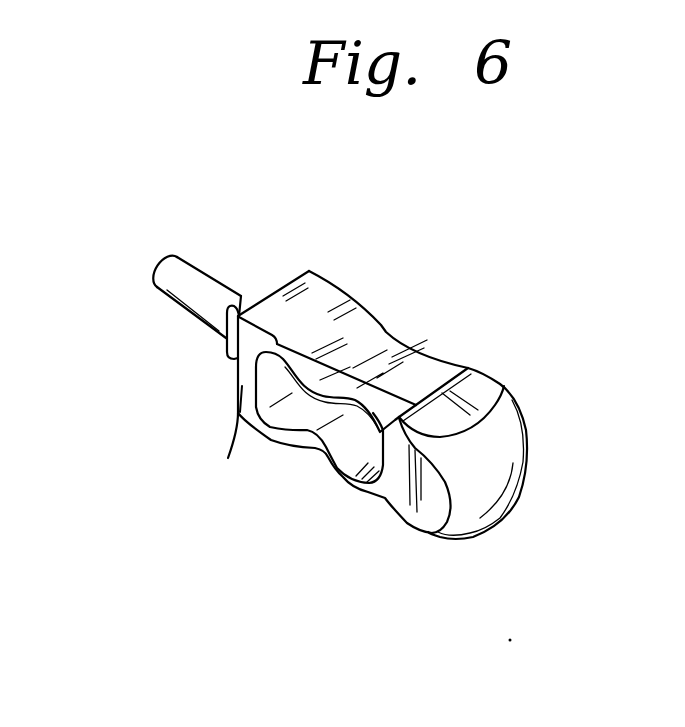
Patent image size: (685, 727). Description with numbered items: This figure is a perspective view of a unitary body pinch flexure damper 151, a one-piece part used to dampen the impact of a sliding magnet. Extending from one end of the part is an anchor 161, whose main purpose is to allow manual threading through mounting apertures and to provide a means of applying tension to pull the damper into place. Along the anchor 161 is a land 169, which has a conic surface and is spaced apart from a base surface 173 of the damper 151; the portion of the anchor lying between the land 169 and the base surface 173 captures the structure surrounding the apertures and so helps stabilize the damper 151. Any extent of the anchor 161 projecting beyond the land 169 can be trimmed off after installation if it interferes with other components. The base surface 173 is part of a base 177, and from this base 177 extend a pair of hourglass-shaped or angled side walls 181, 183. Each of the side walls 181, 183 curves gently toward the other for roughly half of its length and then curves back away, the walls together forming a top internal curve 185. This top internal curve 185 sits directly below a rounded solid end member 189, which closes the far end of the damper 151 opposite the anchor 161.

The unitary body pinch flexure damper 151 is at (528, 354).
The anchor 161 is at (194, 265).
The land 169 is at (265, 296).
The base surface 173 is at (291, 278).
The base 177 is at (233, 442).
The side wall 181 is at (372, 332).
The side wall 183 is at (318, 452).
The top internal curve 185 is at (342, 477).
The rounded solid end member 189 is at (433, 481).